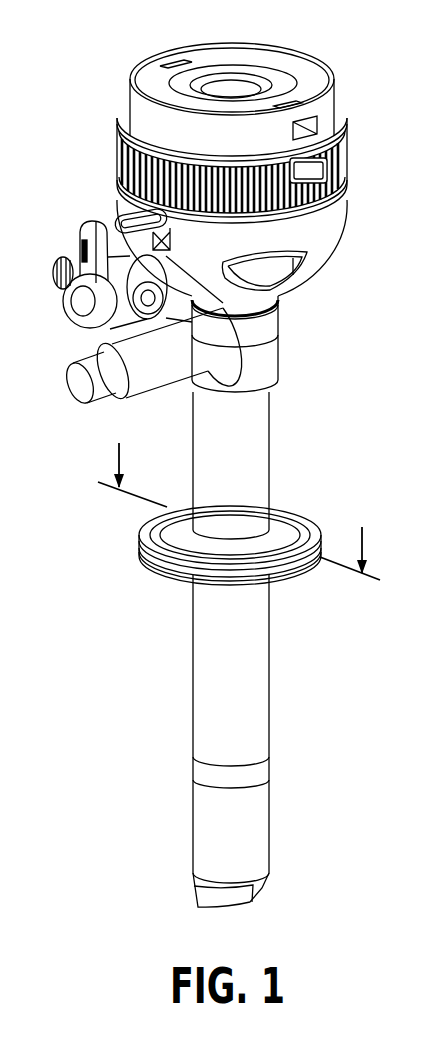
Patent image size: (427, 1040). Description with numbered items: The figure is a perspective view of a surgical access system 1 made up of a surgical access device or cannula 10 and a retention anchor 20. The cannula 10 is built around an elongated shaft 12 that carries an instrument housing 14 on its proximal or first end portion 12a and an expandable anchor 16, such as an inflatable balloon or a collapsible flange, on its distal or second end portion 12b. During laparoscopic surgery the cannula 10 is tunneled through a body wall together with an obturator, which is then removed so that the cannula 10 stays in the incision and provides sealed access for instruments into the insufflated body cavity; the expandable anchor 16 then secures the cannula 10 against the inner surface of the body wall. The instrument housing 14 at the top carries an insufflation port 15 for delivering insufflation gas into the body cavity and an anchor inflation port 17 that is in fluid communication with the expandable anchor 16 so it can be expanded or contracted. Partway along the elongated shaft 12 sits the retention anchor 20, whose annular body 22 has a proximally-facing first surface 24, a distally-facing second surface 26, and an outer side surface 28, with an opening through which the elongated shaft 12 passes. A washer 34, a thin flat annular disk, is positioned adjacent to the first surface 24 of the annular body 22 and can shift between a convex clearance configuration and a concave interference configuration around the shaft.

The surgical access system 1 is at (120, 70).
The cannula 10 is at (68, 200).
The elongated shaft 12 is at (260, 462).
The proximal end portion 12a is at (282, 386).
The distal end portion 12b is at (170, 858).
The instrument housing 14 is at (347, 207).
The insufflation port 15 is at (55, 272).
The expandable anchor 16 is at (268, 832).
The anchor inflation port 17 is at (72, 386).
The retention anchor 20 is at (107, 548).
The annular body 22 is at (142, 528).
The first surface 24 is at (303, 510).
The second surface 26 is at (289, 583).
The outer side surface 28 is at (138, 552).
The washer 34 is at (186, 518).